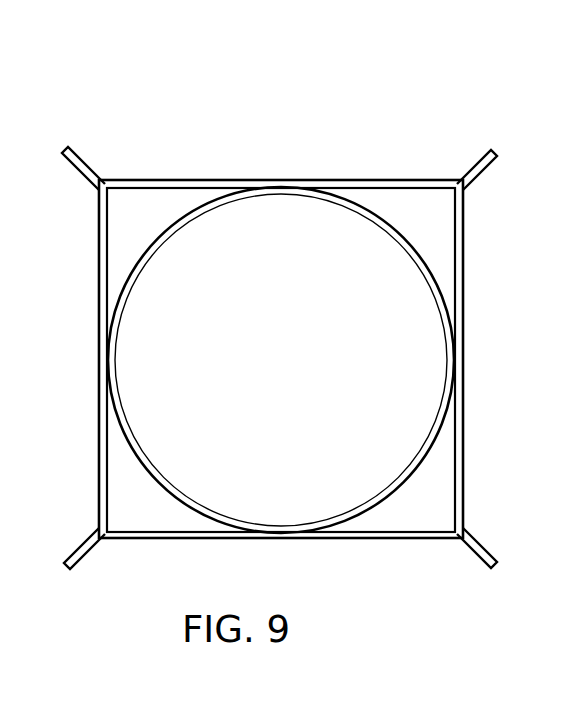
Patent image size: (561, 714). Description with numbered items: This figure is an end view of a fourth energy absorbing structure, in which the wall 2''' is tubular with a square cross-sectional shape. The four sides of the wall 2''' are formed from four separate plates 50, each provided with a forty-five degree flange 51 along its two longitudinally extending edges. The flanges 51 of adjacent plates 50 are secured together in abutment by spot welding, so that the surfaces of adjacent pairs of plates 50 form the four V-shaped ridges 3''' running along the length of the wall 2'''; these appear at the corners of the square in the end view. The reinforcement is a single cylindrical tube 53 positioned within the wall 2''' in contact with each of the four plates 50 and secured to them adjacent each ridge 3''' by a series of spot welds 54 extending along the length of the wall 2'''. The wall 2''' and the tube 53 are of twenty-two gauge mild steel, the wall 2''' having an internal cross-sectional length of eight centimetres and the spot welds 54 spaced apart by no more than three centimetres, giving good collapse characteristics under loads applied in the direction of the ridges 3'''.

The plate 50 is at (180, 180).
The flange 51 is at (98, 172).
The cylindrical tube 53 is at (455, 376).
The spot welds 54 is at (290, 180).
The wall 2''' is at (501, 263).
The V-shaped ridge 3''' is at (462, 95).